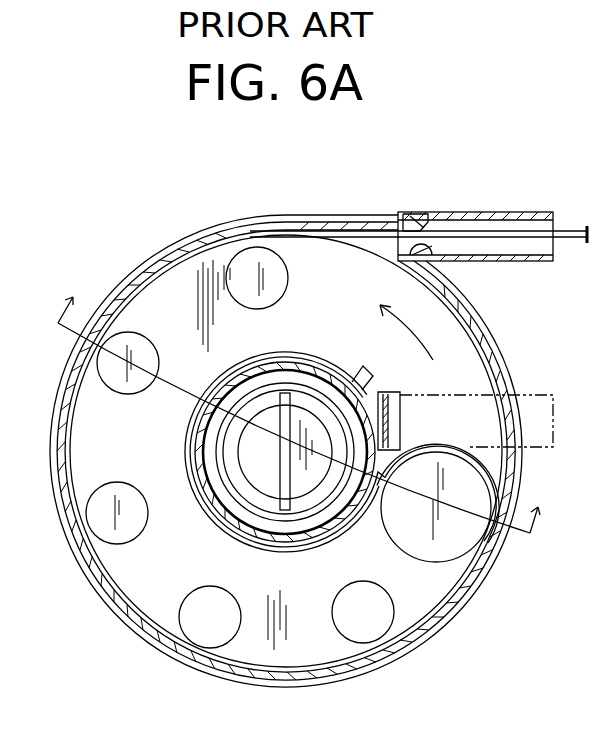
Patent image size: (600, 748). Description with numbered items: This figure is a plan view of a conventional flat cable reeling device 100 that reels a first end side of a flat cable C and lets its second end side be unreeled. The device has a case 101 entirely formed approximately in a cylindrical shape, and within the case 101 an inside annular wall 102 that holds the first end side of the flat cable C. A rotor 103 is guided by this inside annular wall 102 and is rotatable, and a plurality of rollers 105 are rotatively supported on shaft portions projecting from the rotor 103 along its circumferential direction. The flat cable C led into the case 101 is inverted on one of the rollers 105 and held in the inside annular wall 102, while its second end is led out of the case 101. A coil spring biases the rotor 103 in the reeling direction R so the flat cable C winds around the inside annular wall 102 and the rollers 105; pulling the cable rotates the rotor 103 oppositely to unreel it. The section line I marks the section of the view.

The flat cable reeling device 100 is at (127, 233).
The case 101 is at (496, 345).
The inside annular wall 102 is at (280, 541).
The rotor 103 is at (137, 567).
The rollers 105 is at (289, 278).
The flat cable C is at (493, 237).
The reeling direction R is at (410, 328).
The section line I- I is at (296, 409).